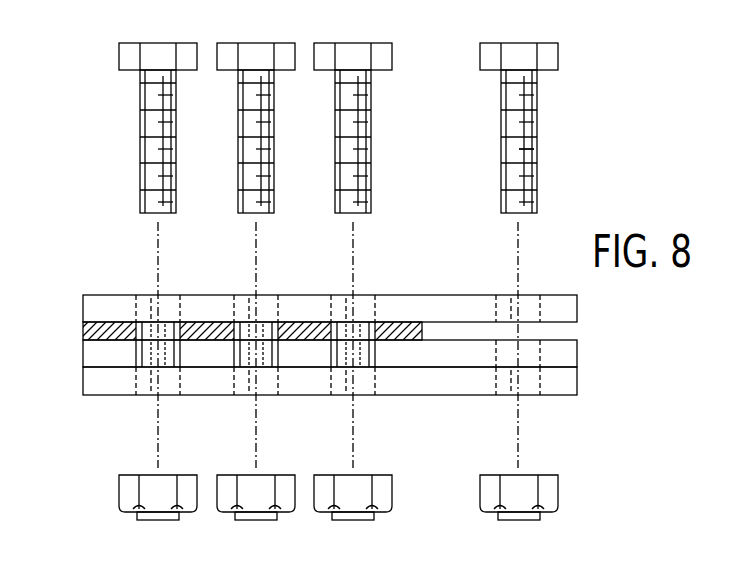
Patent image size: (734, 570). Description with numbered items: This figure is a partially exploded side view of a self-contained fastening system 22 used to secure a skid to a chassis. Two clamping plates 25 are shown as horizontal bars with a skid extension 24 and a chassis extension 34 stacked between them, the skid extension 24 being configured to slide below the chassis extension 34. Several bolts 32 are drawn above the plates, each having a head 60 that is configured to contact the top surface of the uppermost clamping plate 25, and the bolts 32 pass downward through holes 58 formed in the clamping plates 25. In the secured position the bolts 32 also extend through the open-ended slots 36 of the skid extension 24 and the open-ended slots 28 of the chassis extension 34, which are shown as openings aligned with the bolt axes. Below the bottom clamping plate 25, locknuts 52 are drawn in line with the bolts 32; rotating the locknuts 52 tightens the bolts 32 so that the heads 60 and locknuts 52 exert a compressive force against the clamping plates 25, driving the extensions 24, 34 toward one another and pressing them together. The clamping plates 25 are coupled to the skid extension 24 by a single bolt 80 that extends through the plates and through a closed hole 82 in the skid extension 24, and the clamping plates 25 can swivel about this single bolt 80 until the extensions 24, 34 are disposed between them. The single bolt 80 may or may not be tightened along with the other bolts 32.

The fastening system 22 is at (613, 153).
The skid extension 24 is at (102, 356).
The clamping plates 25 is at (100, 310).
The open-ended slots 28 is at (150, 365).
The bolts 32 is at (237, 142).
The chassis extension 34 is at (90, 330).
The open-ended slots 36 is at (150, 325).
The locknuts 52 is at (163, 520).
The holes 58 is at (167, 288).
The heads 60 is at (255, 43).
The single bolt 80 is at (527, 145).
The closed hole 82 is at (525, 355).